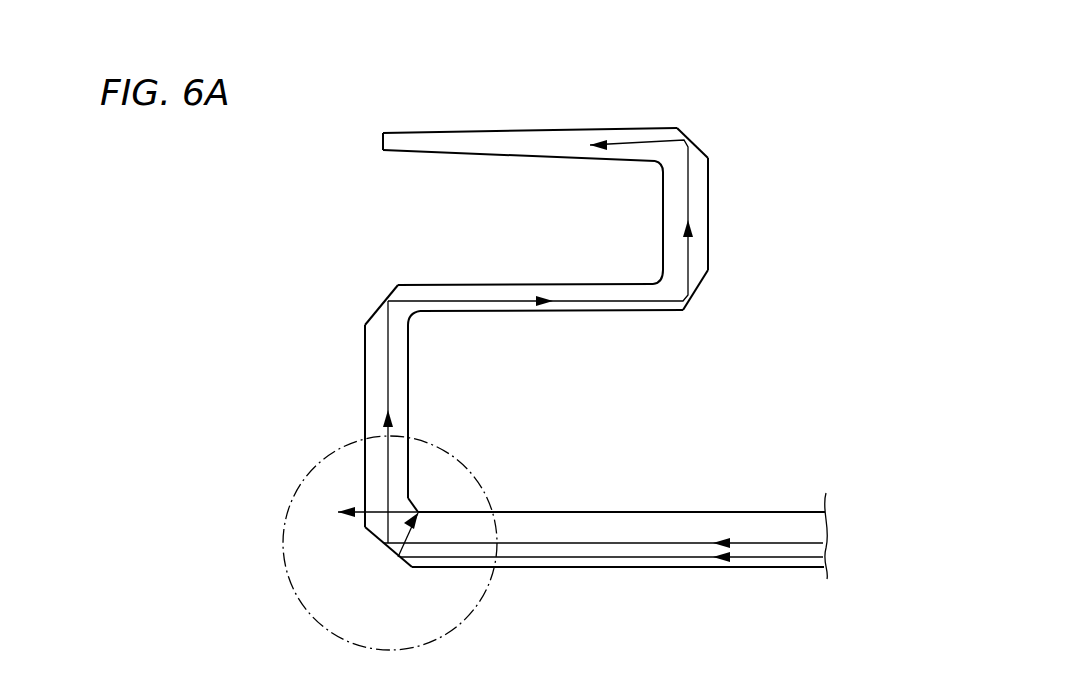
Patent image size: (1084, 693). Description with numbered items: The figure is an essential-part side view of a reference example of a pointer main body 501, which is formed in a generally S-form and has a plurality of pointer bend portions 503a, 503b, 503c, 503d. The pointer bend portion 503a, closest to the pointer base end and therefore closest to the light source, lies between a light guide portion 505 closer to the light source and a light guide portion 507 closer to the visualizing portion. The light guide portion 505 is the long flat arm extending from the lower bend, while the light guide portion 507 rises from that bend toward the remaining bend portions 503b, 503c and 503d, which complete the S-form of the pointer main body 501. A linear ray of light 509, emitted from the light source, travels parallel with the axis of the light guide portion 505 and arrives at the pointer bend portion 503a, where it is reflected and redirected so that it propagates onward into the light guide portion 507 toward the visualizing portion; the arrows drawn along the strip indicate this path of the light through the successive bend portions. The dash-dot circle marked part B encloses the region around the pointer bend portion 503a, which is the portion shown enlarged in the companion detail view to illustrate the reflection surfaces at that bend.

The pointer main body 501 is at (717, 122).
The pointer bend portion 503a is at (435, 490).
The pointer bend portion 503b is at (428, 325).
The pointer bend portion 503c is at (647, 263).
The pointer bend portion 503d is at (652, 175).
The light guide portion 505 is at (770, 512).
The light guide portion 507 is at (365, 360).
The linear ray of light 509 is at (798, 540).
The part B is at (287, 518).